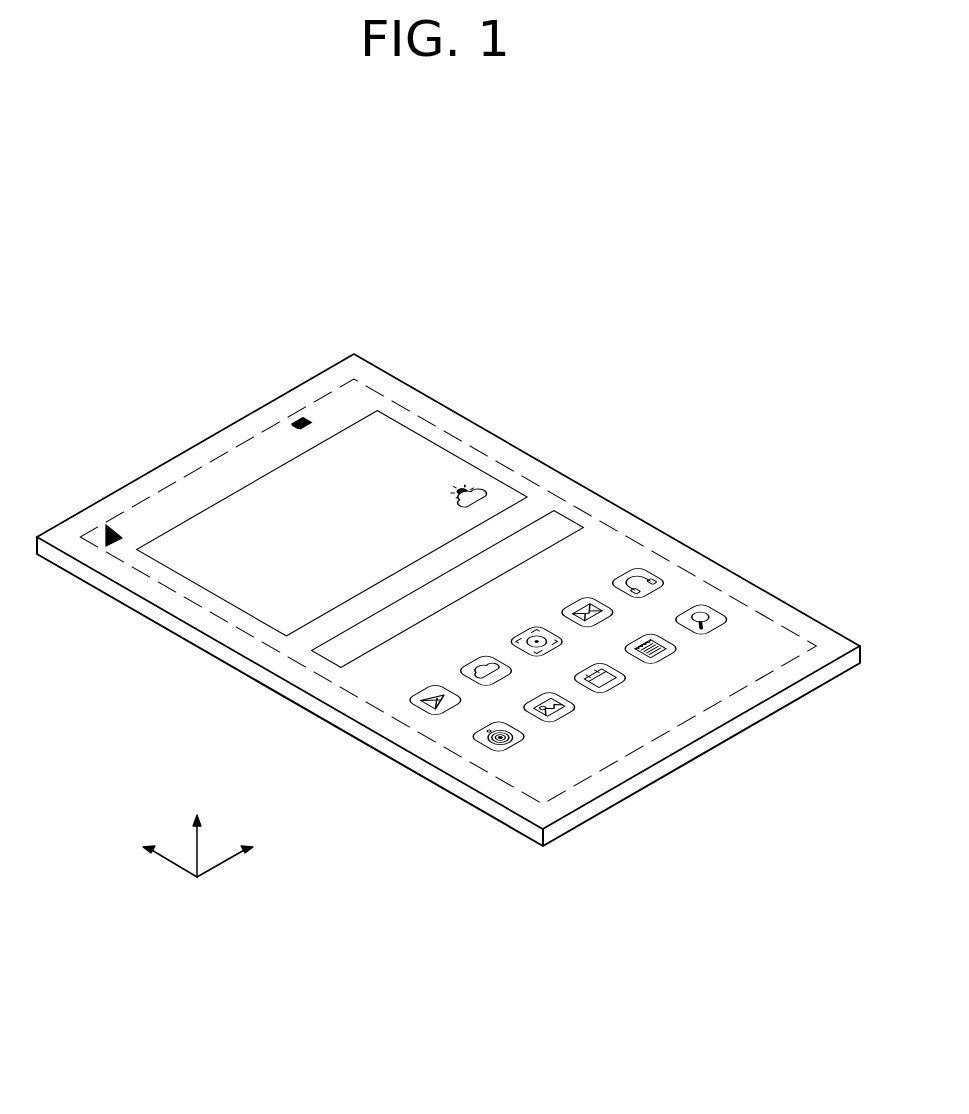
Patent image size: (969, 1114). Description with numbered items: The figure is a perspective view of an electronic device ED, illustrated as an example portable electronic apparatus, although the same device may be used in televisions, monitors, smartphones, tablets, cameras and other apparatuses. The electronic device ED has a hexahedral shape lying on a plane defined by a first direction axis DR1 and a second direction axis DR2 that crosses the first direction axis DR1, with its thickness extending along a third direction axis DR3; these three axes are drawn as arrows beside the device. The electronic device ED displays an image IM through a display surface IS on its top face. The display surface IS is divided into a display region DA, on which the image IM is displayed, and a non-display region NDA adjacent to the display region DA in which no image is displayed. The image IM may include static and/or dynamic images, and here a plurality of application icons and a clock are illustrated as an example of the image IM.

The electronic device ED is at (448, 581).
The display surface IS is at (448, 585).
The non-display region NDA is at (172, 474).
The display region DA is at (448, 578).
The image IM is at (447, 443).
The first direction axis DR1 is at (247, 854).
The second direction axis DR2 is at (147, 854).
The third direction axis DR3 is at (197, 834).